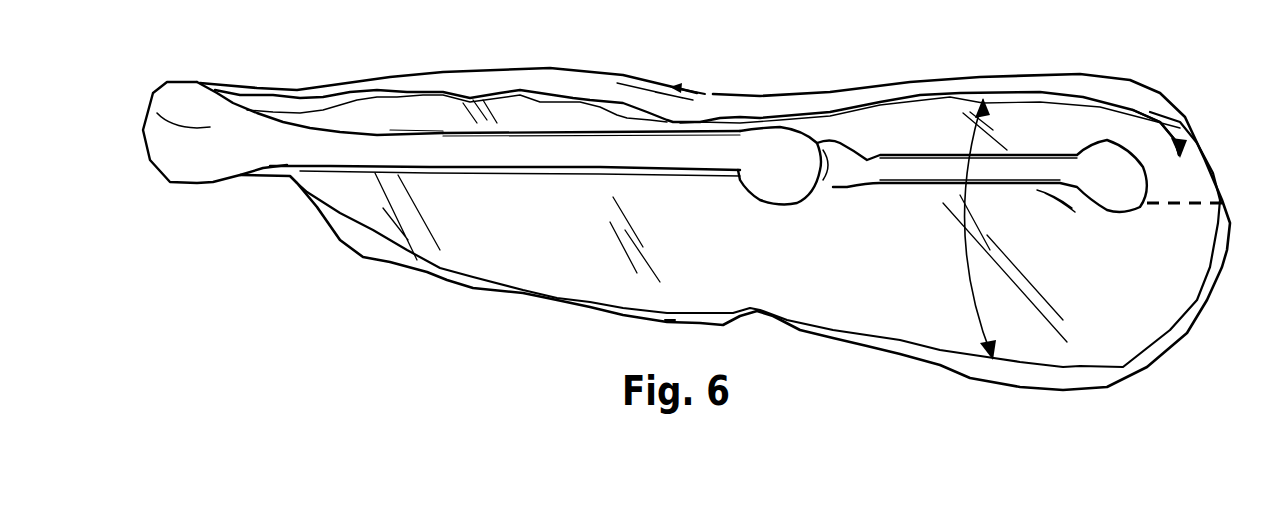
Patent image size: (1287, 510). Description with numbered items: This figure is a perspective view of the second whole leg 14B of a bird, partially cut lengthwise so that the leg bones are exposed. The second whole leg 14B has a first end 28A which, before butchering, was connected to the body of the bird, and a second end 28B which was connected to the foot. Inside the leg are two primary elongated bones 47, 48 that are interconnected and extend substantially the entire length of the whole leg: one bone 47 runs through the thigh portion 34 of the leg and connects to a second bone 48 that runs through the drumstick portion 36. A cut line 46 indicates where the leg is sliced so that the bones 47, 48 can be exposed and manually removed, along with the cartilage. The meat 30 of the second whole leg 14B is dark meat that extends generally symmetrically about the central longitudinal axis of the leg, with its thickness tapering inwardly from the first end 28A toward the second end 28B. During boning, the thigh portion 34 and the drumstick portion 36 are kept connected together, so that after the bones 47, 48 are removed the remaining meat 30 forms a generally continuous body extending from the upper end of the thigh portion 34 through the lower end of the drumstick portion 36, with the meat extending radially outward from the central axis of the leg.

The second whole leg 14B is at (645, 175).
The meat 30 is at (878, 291).
The drumstick portion 36 is at (497, 80).
The thigh portion 34 is at (1005, 87).
The first end 28A is at (1203, 173).
The second end 28B is at (192, 160).
The cut line 46 is at (1178, 204).
The bone 47 is at (920, 170).
The second bone 48 is at (502, 148).